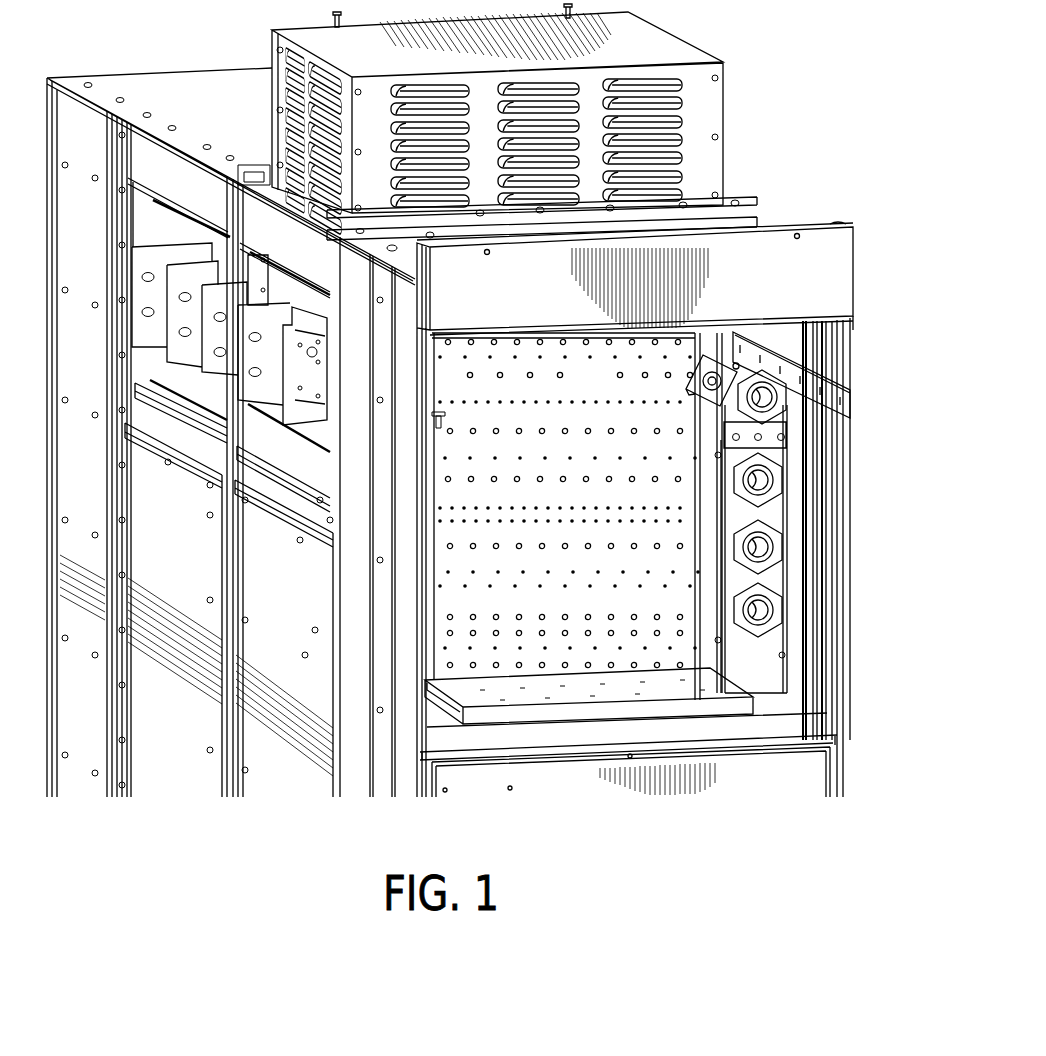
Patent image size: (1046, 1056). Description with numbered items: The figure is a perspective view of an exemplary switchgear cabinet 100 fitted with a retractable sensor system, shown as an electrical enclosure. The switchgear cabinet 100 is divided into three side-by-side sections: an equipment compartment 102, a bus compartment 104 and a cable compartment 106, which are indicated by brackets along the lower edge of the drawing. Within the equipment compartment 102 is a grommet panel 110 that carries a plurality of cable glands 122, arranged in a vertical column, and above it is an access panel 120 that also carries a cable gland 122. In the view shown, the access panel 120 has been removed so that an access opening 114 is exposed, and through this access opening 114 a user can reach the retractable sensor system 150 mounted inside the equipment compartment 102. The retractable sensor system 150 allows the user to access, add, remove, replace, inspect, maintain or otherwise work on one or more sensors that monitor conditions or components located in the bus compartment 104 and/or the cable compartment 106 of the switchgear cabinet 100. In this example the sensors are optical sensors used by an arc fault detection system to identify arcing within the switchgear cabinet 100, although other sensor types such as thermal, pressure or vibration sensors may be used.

The switchgear cabinet 100 is at (779, 98).
The equipment compartment 102 is at (233, 808).
The bus compartment 104 is at (230, 808).
The cable compartment 106 is at (45, 808).
The grommet panel 110 is at (736, 575).
The access opening 114 is at (752, 320).
The access panel 120 is at (704, 355).
The cable gland 122 is at (701, 365).
The retractable sensor system 150 is at (690, 313).